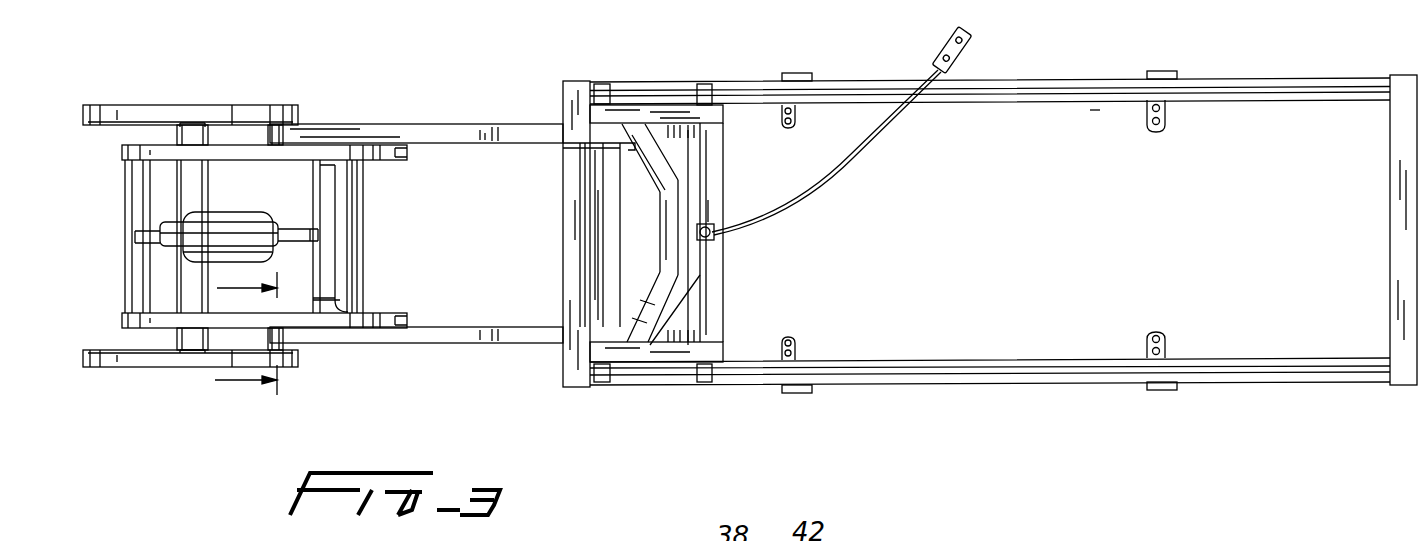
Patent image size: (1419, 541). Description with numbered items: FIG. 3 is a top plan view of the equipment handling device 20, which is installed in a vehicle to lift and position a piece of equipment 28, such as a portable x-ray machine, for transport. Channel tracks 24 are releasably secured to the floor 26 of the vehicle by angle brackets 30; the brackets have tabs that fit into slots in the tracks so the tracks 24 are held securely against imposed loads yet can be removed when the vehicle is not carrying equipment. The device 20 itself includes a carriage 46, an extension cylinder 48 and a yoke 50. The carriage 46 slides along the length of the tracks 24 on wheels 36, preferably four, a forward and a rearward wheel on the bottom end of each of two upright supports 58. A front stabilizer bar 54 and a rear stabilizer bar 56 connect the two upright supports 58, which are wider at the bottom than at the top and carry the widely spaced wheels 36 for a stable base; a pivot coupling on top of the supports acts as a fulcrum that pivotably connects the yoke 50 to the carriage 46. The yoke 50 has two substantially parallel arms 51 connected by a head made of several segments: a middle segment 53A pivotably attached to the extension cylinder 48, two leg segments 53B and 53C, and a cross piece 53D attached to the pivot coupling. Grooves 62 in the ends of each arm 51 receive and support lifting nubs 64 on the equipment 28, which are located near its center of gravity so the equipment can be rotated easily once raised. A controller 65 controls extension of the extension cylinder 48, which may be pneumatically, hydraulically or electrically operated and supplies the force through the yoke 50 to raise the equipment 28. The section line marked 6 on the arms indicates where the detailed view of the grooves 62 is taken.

The equipment handling device 20 is at (742, 42).
The channel tracks 24 is at (995, 82).
The floor 26 is at (1088, 138).
The equipment 28 is at (148, 100).
The angle brackets 30 is at (790, 74).
The wheels 36 is at (697, 82).
The carriage 46 is at (728, 104).
The extension cylinder 48 is at (712, 233).
The yoke 50 is at (510, 124).
The arms 51 is at (396, 120).
The middle segment 53A is at (692, 257).
The leg segment 53B is at (680, 297).
The leg segment 53C is at (603, 132).
The cross piece 53D is at (568, 244).
The front stabilizer bar 54 is at (712, 207).
The rear stabilizer bar 56 is at (613, 203).
The upright supports 58 is at (710, 137).
The grooves 62 is at (278, 128).
The lifting nubs 64 is at (278, 148).
The controller 65 is at (937, 54).
The section line 6 is at (246, 337).